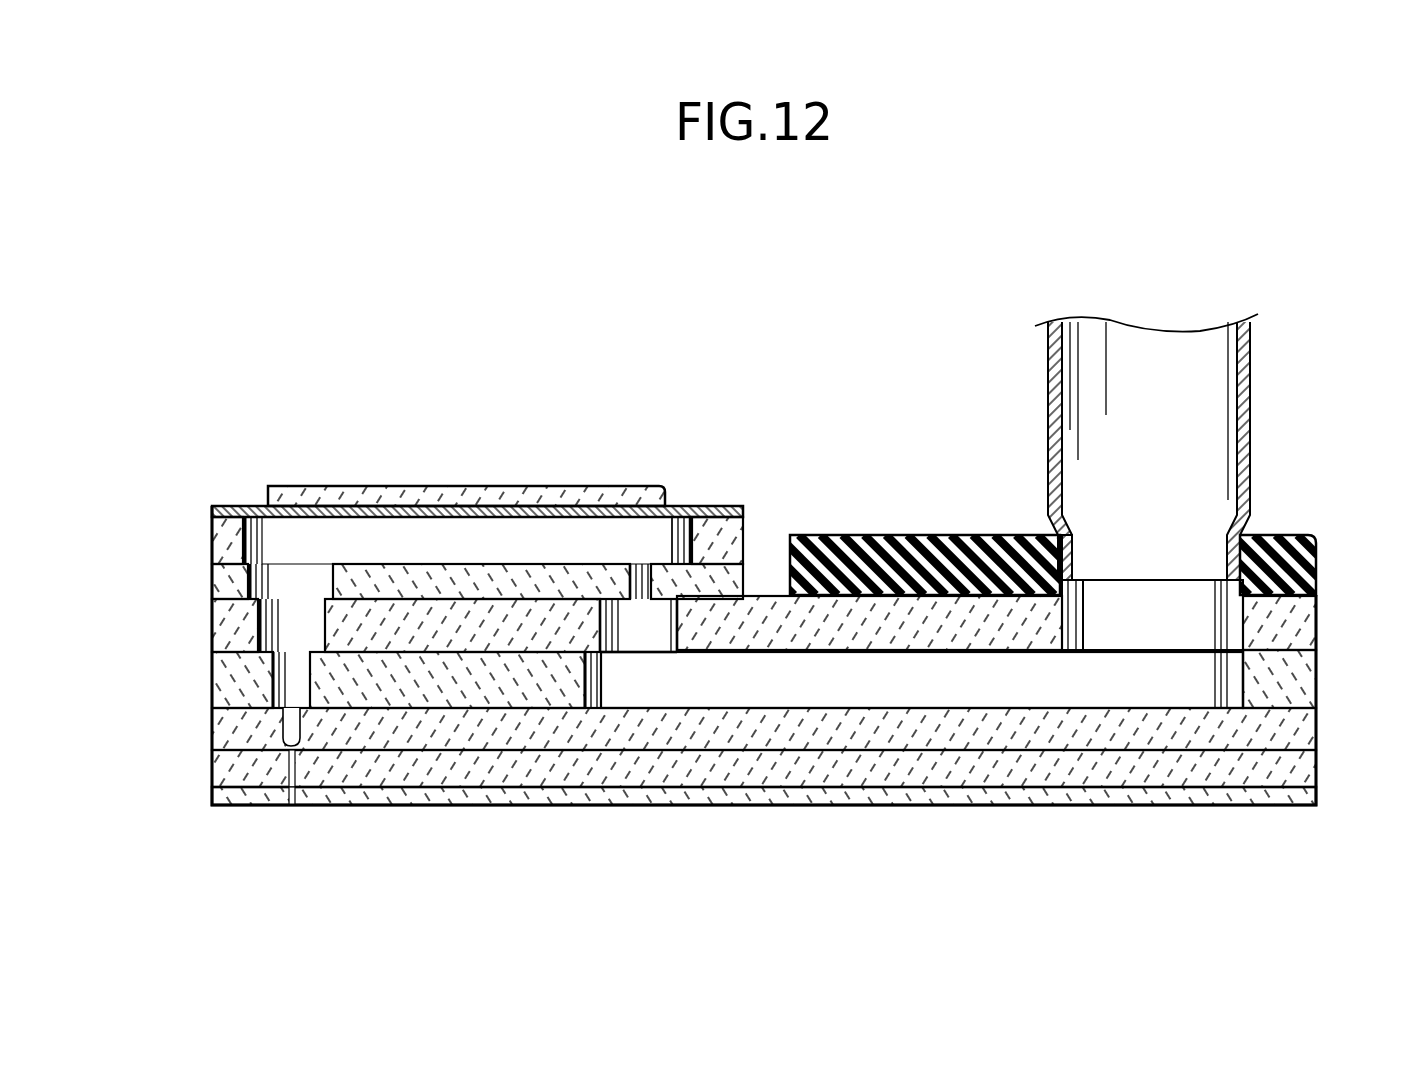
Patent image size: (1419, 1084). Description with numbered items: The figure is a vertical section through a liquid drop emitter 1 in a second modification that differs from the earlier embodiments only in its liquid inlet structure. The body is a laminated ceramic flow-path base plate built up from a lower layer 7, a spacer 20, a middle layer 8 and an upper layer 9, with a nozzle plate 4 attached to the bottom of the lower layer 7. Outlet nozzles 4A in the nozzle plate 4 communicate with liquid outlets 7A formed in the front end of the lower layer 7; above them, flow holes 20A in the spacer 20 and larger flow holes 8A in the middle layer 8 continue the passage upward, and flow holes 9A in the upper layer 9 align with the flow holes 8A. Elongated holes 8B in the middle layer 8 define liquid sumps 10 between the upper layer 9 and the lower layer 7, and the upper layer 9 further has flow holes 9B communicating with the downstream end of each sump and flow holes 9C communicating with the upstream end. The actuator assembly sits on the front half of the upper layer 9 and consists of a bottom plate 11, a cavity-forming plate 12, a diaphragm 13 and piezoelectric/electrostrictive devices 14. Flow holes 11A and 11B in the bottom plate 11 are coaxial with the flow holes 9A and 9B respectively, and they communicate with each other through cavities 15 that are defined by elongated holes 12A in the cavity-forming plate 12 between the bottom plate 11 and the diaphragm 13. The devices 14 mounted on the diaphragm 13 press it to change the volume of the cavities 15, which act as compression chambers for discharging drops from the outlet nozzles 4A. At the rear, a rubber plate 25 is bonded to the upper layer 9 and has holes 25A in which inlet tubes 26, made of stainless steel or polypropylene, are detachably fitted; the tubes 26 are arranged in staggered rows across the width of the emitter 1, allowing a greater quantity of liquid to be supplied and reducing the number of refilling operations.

The liquid drop emitter 1 is at (975, 286).
The nozzle plate 4 is at (838, 800).
The outlet nozzles 4A is at (292, 808).
The lower layer 7 is at (232, 772).
The liquid outlets 7A is at (312, 806).
The middle layer 8 is at (232, 690).
The flow holes 8A is at (278, 665).
The elongated holes 8B is at (598, 678).
The upper layer 9 is at (226, 607).
The flow holes 9A is at (264, 614).
The flow holes 9B is at (655, 642).
The flow holes 9C is at (1240, 660).
The liquid sumps 10 is at (938, 680).
The bottom plate 11 is at (226, 578).
The flow holes 11A is at (330, 580).
The flow holes 11B is at (640, 580).
The cavity-forming plate 12 is at (224, 540).
The elongated holes 12A is at (680, 530).
The diaphragm 13 is at (212, 511).
The piezoelectric/electrostrictive devices 14 is at (300, 490).
The cavities 15 is at (462, 535).
The spacer 20 is at (512, 735).
The flow holes 20A is at (290, 722).
The rubber plate 25 is at (1318, 560).
The holes 25A is at (1240, 608).
The inlet tubes 26 is at (1250, 352).